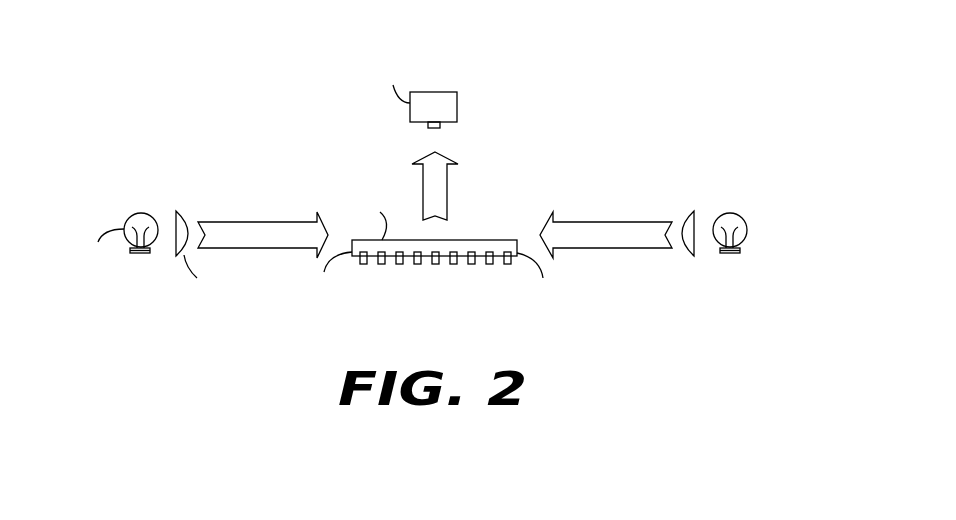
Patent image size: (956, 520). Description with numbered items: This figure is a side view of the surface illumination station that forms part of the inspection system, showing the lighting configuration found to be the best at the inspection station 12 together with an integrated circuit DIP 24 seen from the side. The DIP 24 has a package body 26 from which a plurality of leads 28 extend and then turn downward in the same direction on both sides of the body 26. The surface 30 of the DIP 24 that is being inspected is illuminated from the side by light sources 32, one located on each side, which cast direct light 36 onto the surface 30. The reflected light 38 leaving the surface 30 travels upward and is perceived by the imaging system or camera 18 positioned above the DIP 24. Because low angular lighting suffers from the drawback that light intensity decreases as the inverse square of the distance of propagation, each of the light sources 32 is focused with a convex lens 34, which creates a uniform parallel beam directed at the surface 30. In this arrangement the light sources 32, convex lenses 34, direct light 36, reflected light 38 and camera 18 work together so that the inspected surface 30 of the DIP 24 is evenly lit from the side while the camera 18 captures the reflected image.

The inspection station 12 is at (553, 63).
The camera 18 is at (457, 105).
The integrated circuit DIP 24 is at (425, 261).
The package body 26 is at (446, 265).
The leads 28 is at (399, 265).
The surface 30 is at (490, 240).
The light sources 32 is at (124, 216).
The convex lenses 34 is at (178, 211).
The direct light 36 is at (272, 222).
The reflected light 38 is at (447, 183).